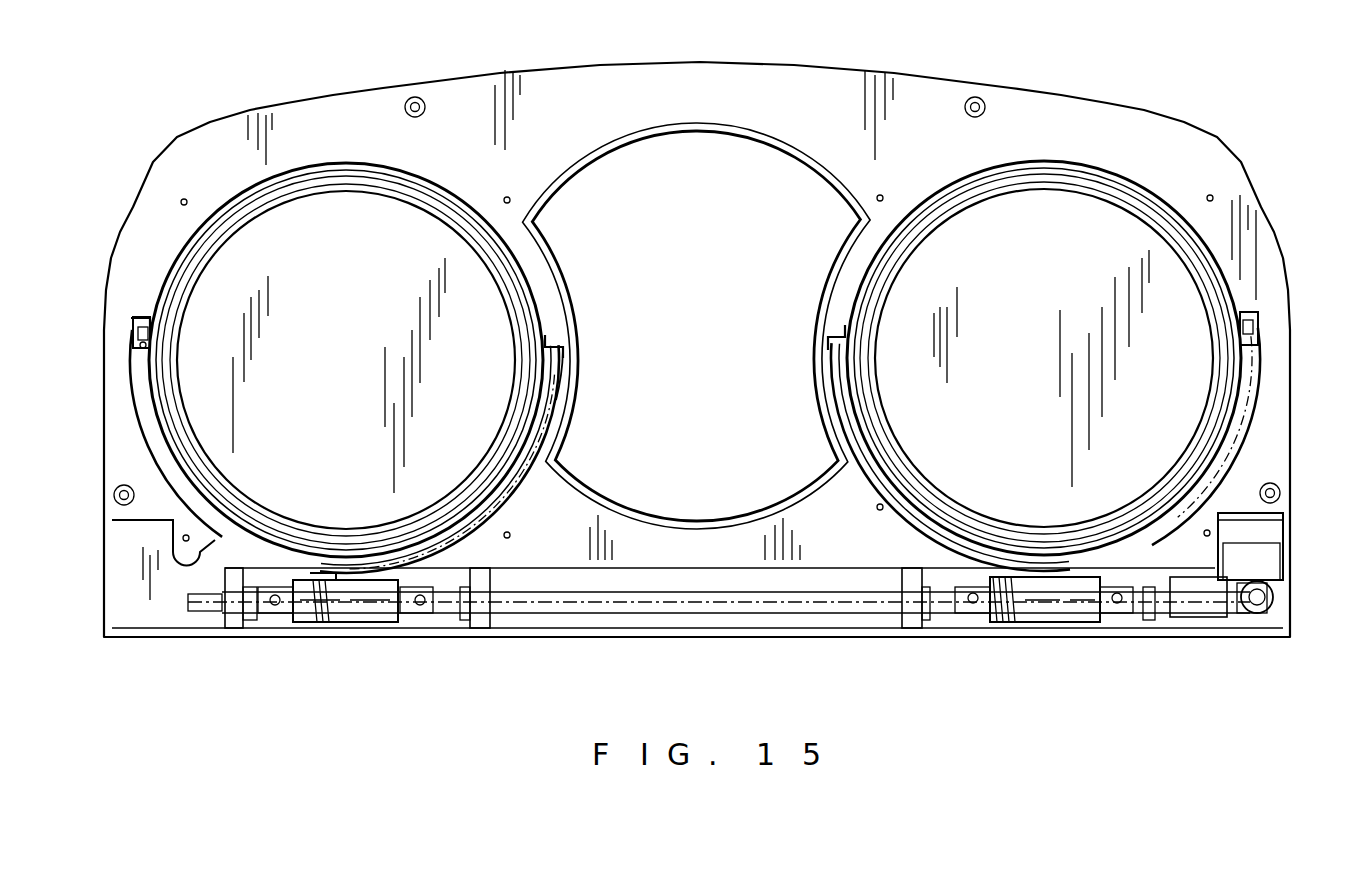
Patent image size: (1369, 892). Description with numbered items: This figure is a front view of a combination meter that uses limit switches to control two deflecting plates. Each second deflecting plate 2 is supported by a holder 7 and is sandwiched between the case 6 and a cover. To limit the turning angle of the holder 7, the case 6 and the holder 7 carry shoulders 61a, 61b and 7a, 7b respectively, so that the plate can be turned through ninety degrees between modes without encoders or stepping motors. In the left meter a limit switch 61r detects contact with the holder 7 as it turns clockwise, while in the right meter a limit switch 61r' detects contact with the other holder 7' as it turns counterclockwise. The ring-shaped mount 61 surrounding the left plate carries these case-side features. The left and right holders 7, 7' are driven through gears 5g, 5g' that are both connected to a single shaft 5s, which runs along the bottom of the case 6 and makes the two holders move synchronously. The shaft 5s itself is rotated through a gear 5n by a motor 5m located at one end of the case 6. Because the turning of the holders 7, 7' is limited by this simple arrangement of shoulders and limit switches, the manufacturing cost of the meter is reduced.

The case 6 is at (607, 95).
The second deflecting plate 2 is at (275, 265).
The ring member 61 is at (143, 425).
The shoulder 61a is at (150, 318).
The limit switch 61r is at (90, 329).
The shoulder 61b is at (566, 352).
The holder 7 is at (446, 459).
The shoulder 7a is at (325, 580).
The shoulder 7b is at (548, 345).
The holder 7' is at (1089, 449).
The limit switch 61r' is at (1302, 326).
The motor 5m is at (1220, 523).
The gear 5n is at (1262, 613).
The gear 5g is at (345, 636).
The gear 5g' is at (1045, 634).
The shaft 5s is at (715, 612).